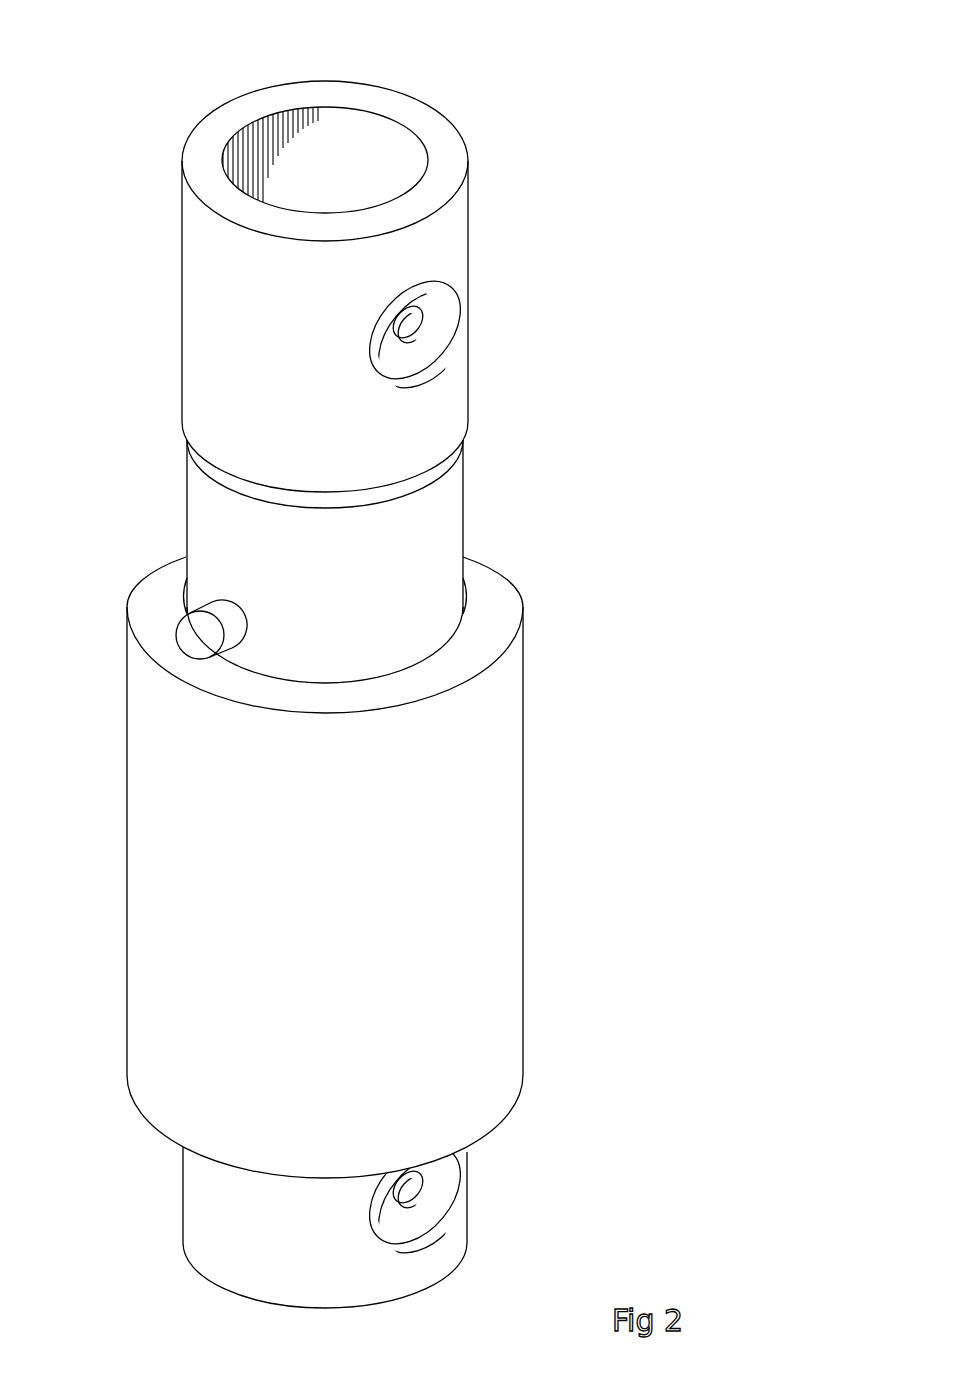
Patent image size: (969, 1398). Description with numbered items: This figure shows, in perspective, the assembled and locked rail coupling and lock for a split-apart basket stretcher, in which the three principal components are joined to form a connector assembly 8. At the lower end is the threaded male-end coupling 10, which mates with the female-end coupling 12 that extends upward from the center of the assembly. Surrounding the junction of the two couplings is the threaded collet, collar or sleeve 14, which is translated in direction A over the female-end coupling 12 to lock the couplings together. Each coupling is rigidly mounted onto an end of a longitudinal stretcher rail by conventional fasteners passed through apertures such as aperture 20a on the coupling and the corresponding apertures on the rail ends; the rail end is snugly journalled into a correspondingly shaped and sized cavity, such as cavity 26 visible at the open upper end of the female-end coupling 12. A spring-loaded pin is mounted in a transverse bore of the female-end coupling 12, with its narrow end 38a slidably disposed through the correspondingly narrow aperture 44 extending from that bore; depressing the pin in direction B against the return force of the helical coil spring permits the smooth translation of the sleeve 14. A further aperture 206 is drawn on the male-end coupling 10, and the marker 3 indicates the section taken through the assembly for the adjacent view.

The connector assembly 8 is at (636, 622).
The threaded male-end coupling 10 is at (468, 1222).
The female-end coupling 12 is at (453, 505).
The threaded collet, collar or sleeve 14 is at (498, 847).
The aperture 20a is at (403, 325).
The cavity 26 is at (353, 113).
The narrow end of pin 38a is at (195, 610).
The narrow aperture 44 is at (242, 622).
The countersunk hole 206 is at (393, 1178).
The section line 3 is at (423, 93).
The direction A is at (543, 553).
The direction B is at (168, 672).